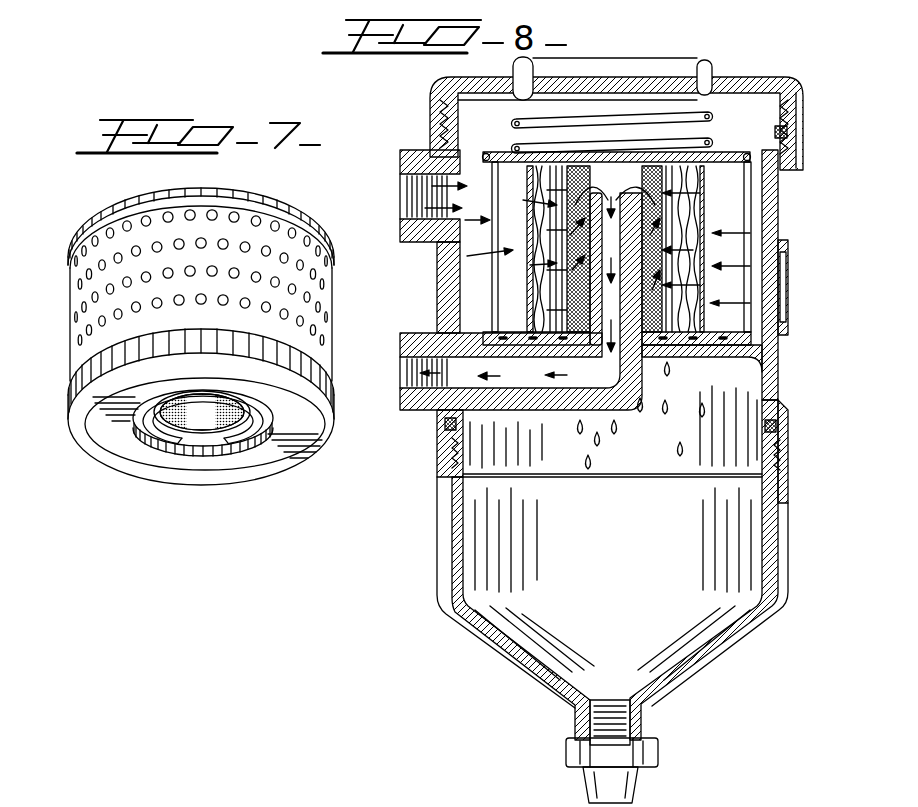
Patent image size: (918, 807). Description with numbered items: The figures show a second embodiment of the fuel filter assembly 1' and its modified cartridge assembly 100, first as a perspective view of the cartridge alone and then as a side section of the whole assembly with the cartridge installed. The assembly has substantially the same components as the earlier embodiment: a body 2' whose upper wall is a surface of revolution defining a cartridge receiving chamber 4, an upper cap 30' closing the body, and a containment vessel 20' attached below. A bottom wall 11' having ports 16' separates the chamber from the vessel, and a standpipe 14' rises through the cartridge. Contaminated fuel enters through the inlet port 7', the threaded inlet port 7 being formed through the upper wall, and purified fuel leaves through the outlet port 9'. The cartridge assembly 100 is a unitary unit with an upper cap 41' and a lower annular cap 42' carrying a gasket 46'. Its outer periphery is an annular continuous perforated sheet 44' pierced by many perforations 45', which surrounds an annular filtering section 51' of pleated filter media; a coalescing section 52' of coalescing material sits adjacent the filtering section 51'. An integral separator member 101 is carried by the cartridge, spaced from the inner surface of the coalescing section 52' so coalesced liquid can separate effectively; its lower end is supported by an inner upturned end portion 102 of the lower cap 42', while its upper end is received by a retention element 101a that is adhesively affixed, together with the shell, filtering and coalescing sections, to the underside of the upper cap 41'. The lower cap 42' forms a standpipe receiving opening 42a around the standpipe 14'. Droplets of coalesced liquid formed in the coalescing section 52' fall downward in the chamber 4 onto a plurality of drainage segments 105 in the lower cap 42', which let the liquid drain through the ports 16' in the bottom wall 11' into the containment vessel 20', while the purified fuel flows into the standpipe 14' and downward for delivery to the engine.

In FIG. 7, the cartridge assembly 100 is at (67, 244).
In FIG. 8, the cartridge assembly 100 is at (745, 135).
In FIG. 7, the upper cap 41' is at (201, 216).
In FIG. 7, the annular continuous perforated sheet 44' is at (201, 280).
In FIG. 7, the perforations 45' is at (332, 243).
In FIG. 7, the gasket 46' is at (189, 396).
In FIG. 7, the lower cap 42' is at (200, 419).
In FIG. 7, the inner upturned end portion 102 is at (160, 435).
In FIG. 7, the drainage segments 105 is at (240, 436).
In FIG. 8, the upper cap 30' is at (582, 121).
In FIG. 8, the fuel filter assembly 1' is at (647, 58).
In FIG. 8, the filtering section 51' is at (593, 138).
In FIG. 8, the cartridge receiving chamber 4 is at (787, 133).
In FIG. 8, the inlet port 7' is at (407, 233).
In FIG. 8, the inlet port 7 is at (592, 204).
In FIG. 8, the outlet port 9' is at (510, 320).
In FIG. 8, the bottom wall 11' is at (729, 361).
In FIG. 8, the body 2' is at (791, 275).
In FIG. 8, the containment vessel 20' is at (632, 594).
In FIG. 8, the ports 16' is at (651, 301).
In FIG. 8, the standpipe receiving opening 42a is at (657, 360).
In FIG. 8, the coalescing section 52' is at (637, 106).
In FIG. 8, the retention element 101a is at (527, 249).
In FIG. 8, the separator member 101 is at (562, 224).
In FIG. 8, the standpipe 14' is at (696, 249).